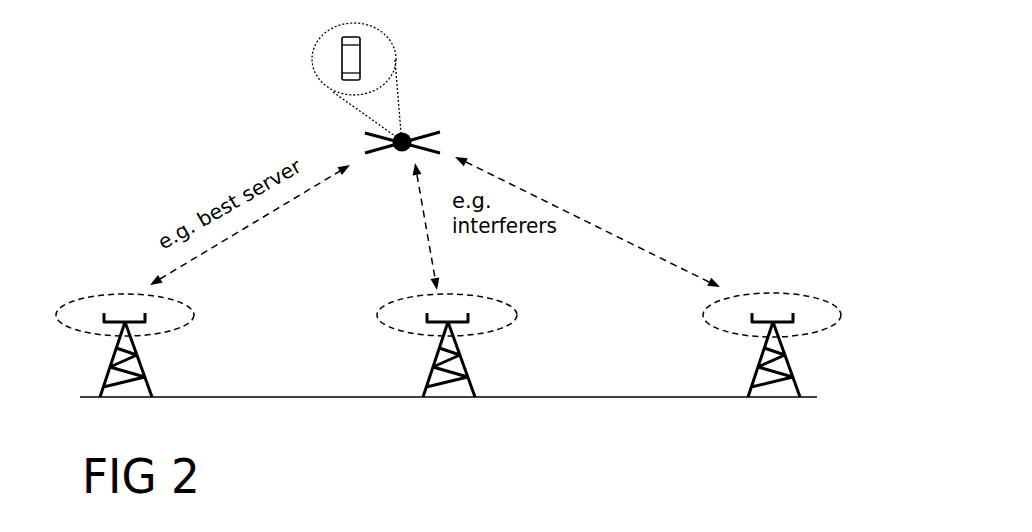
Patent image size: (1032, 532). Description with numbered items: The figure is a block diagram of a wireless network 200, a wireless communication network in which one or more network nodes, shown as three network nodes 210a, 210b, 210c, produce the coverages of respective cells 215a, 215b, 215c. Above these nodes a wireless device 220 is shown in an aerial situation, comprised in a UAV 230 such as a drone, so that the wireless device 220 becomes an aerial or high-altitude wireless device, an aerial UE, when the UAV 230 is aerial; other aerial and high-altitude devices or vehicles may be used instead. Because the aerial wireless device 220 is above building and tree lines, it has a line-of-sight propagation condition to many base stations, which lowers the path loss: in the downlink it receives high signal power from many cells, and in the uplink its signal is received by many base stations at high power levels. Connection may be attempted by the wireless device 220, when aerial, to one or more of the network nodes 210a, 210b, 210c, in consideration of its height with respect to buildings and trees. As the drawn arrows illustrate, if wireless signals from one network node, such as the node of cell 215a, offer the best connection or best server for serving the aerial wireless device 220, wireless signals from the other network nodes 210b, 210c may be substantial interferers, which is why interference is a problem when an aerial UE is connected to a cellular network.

The wireless network 200 is at (757, 74).
The wireless device 220 is at (360, 43).
The UAV 230 is at (410, 132).
The network node 210a is at (105, 377).
The network node 210b is at (428, 375).
The network node 210c is at (792, 375).
The cell 215a is at (193, 313).
The cell 215b is at (515, 313).
The cell 215c is at (842, 315).